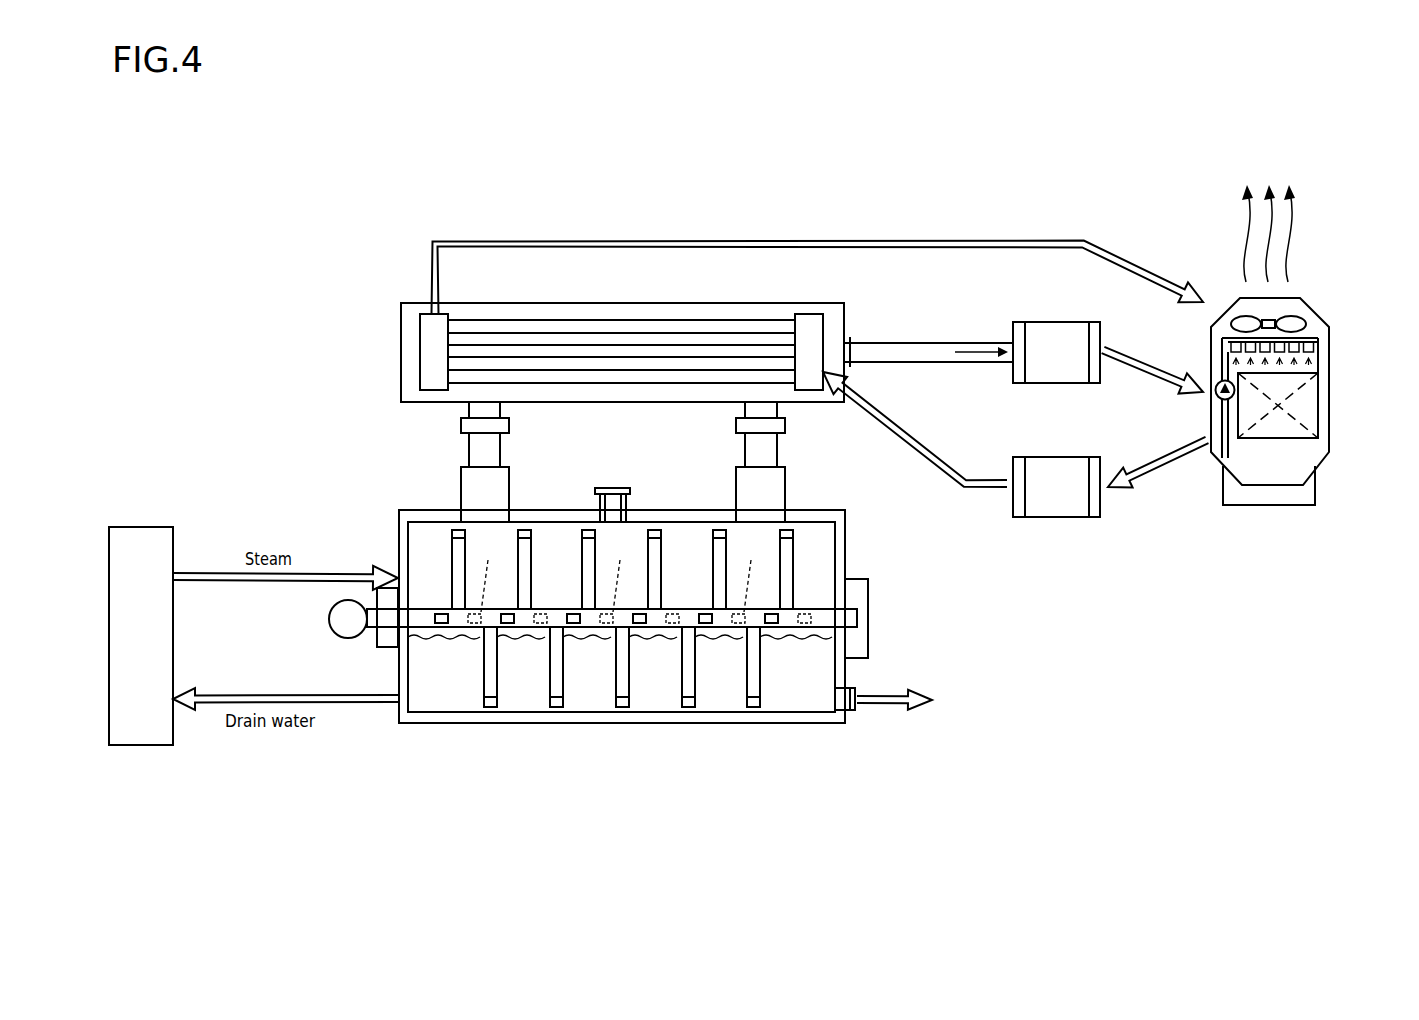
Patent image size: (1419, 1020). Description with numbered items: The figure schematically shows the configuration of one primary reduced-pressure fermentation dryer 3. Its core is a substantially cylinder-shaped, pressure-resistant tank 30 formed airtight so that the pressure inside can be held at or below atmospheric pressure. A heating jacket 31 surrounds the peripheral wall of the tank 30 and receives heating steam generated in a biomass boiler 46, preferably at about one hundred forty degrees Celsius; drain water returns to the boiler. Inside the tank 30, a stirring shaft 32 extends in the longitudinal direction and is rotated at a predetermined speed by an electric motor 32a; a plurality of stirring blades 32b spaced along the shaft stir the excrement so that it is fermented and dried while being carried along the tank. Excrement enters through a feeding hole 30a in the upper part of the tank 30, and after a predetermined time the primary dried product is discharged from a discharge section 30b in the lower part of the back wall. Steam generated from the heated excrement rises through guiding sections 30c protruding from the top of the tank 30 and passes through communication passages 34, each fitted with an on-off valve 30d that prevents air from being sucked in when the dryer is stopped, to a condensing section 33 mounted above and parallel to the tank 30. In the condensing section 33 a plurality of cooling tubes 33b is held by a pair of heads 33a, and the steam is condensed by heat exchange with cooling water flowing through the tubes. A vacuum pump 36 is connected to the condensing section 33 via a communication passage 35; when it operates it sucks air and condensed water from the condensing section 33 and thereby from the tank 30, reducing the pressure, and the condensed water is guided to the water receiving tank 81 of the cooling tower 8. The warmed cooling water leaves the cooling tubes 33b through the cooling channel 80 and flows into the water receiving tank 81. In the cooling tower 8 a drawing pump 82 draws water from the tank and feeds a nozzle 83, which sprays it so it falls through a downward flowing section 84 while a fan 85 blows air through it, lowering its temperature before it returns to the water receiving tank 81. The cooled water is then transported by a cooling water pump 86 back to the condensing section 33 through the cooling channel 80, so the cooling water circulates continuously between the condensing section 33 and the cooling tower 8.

The primary reduced-pressure fermentation dryer 3 is at (553, 737).
The cooling tower 8 is at (1276, 381).
The tank 30 is at (477, 724).
The feeding hole 30a is at (612, 488).
The discharge section 30b is at (840, 712).
The guiding section 30c is at (461, 490).
The on-off valve 30d is at (509, 424).
The heating jacket 31 is at (619, 715).
The stirring shaft 32 is at (420, 620).
The electric motor 32a is at (337, 633).
The stirring blades 32b is at (515, 590).
The condensing section 33 is at (605, 324).
The heads 33a is at (424, 313).
The cooling tubes 33b is at (585, 333).
The communication passage 34 is at (469, 407).
The communication passage 35 is at (1000, 345).
The vacuum pump 36 is at (1076, 322).
The biomass boiler 46 is at (174, 632).
The cooling channel 80 is at (1115, 217).
The water receiving tank 81 is at (1263, 477).
The drawing pump 82 is at (1211, 406).
The nozzle 83 is at (1300, 352).
The downward flowing section 84 is at (1310, 408).
The fan 85 is at (1297, 323).
The cooling water pump 86 is at (1061, 517).